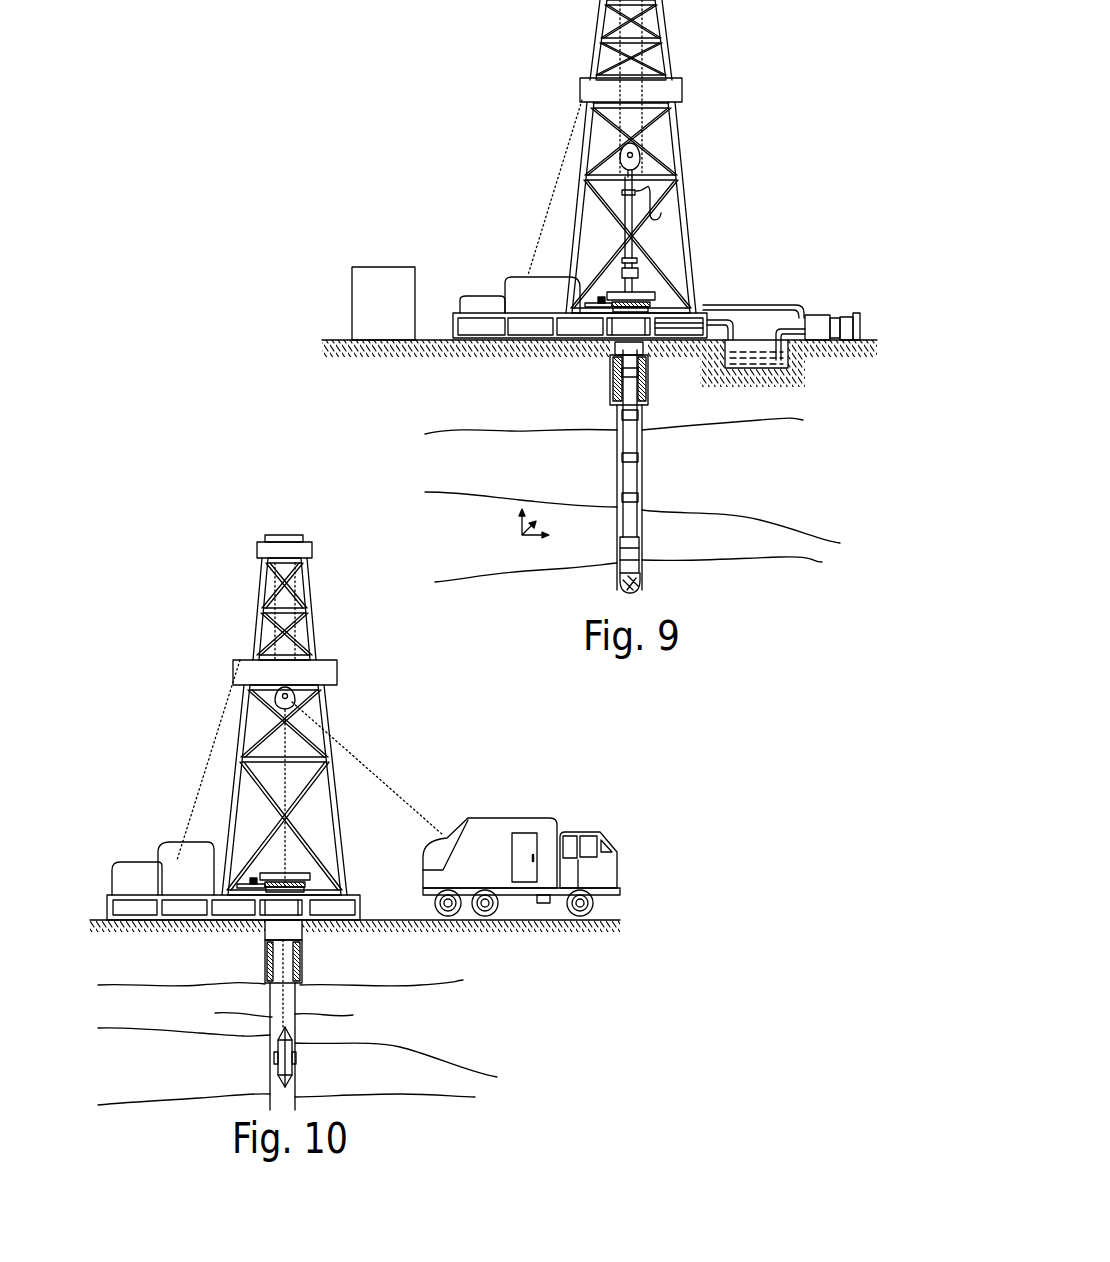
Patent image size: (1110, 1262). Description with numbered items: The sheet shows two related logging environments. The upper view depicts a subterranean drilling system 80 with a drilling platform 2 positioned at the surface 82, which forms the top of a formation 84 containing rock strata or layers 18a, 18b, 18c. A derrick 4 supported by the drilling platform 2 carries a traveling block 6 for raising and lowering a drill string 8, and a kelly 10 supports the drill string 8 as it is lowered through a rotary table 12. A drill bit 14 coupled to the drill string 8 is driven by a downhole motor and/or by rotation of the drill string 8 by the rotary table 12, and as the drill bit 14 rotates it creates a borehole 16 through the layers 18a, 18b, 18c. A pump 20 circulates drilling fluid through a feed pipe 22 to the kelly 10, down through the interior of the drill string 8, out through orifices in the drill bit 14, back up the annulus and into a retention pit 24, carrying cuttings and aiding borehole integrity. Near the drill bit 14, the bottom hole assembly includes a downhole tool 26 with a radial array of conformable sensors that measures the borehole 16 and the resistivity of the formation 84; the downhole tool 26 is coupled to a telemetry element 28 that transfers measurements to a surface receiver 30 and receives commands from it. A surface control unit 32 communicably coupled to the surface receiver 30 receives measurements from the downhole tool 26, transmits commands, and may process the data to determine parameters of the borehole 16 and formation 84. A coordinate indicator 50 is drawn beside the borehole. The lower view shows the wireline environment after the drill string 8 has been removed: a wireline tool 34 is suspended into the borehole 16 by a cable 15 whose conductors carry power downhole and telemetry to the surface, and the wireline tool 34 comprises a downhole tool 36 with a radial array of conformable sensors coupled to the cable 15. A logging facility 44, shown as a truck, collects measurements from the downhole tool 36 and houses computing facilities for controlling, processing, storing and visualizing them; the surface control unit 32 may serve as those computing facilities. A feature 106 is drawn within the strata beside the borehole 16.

In FIG. 9, the drilling platform 2 is at (453, 320).
In FIG. 10, the drilling platform 2 is at (362, 910).
In FIG. 9, the derrick 4 is at (672, 56).
In FIG. 10, the derrick 4 is at (347, 820).
In FIG. 9, the traveling block 6 is at (638, 156).
In FIG. 10, the traveling block 6 is at (297, 694).
In FIG. 9, the drill string 8 is at (630, 426).
In FIG. 9, the kelly 10 is at (630, 207).
In FIG. 9, the rotary table 12 is at (643, 294).
In FIG. 10, the rotary table 12 is at (305, 880).
In FIG. 9, the drill bit 14 is at (642, 585).
In FIG. 10, the cable 15 is at (283, 962).
In FIG. 9, the borehole 16 is at (645, 441).
In FIG. 10, the borehole 16 is at (287, 1005).
In FIG. 9, the rock stratum 18a is at (458, 531).
In FIG. 10, the rock stratum 18a is at (453, 971).
In FIG. 9, the rock stratum 18b is at (632, 486).
In FIG. 10, the rock stratum 18b is at (130, 1018).
In FIG. 9, the rock stratum 18c is at (787, 420).
In FIG. 10, the rock stratum 18c is at (130, 1094).
In FIG. 9, the pump 20 is at (815, 318).
In FIG. 9, the feed pipe 22 is at (750, 305).
In FIG. 9, the retention pit 24 is at (762, 362).
In FIG. 9, the downhole tool 26 is at (623, 555).
In FIG. 9, the telemetry element 28 is at (641, 538).
In FIG. 9, the surface receiver 30 is at (640, 265).
In FIG. 9, the surface control unit 32 is at (390, 309).
In FIG. 10, the wireline tool 34 is at (278, 1040).
In FIG. 10, the downhole tool 36 is at (276, 1062).
In FIG. 10, the logging facility 44 is at (500, 818).
In FIG. 9, the coordinate system 50 is at (512, 527).
In FIG. 9, the drilling system 80 is at (765, 99).
In FIG. 9, the surface 82 is at (330, 334).
In FIG. 10, the surface 82 is at (103, 918).
In FIG. 9, the formation 84 is at (380, 408).
In FIG. 10, the formation 84 is at (581, 994).
In FIG. 10, the fracture 106 is at (340, 1016).